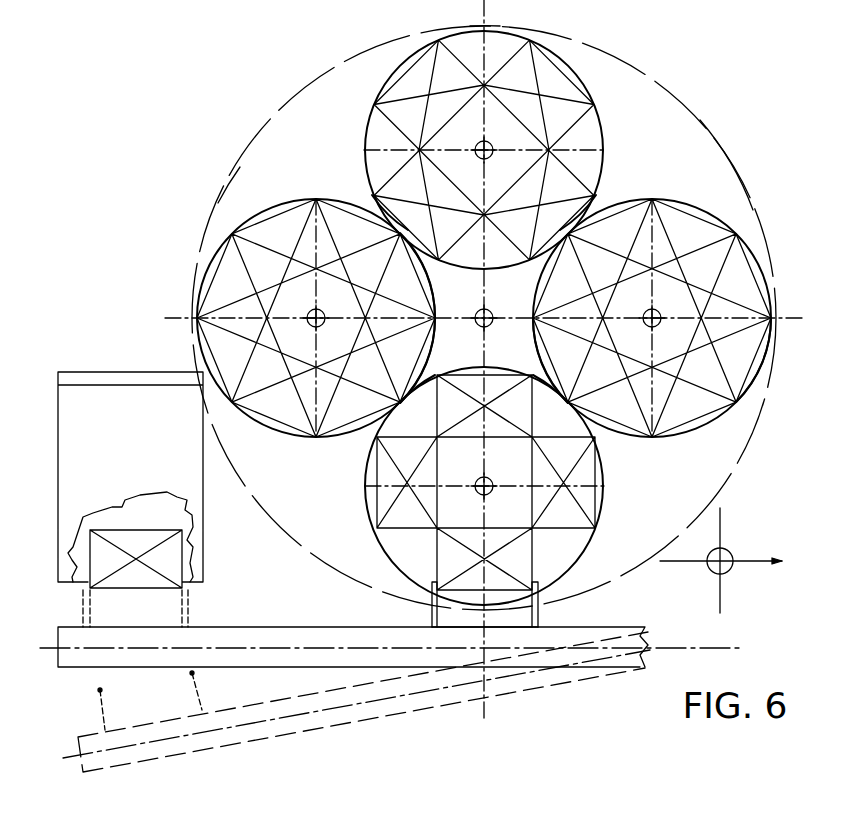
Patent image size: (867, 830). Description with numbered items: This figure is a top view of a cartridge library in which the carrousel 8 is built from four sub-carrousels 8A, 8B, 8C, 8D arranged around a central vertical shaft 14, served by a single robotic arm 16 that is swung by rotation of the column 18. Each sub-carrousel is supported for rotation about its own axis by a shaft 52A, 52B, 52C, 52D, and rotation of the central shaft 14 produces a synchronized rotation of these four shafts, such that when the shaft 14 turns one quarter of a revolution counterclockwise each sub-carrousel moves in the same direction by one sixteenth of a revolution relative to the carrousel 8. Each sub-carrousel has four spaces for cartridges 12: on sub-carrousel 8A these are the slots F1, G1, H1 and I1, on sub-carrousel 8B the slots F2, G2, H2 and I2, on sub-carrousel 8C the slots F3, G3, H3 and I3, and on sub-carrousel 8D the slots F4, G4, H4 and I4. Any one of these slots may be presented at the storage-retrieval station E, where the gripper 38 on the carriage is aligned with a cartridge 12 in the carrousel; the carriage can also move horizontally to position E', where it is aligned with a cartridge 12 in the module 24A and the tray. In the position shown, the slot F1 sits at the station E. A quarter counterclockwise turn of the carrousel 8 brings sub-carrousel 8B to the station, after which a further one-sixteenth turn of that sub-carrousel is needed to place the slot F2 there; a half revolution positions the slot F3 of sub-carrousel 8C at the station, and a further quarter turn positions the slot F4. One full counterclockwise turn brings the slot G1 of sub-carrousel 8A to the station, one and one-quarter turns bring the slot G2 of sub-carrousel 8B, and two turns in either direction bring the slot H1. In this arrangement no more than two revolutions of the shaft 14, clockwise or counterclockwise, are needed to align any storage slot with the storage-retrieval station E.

The carrousel 8 is at (726, 118).
The sub-carrousel 8A is at (722, 515).
The sub-carrousel 8B is at (268, 222).
The sub-carrousel 8C is at (473, 48).
The sub-carrousel 8D is at (697, 227).
The cartridge 12 is at (150, 538).
The vertical shaft 14 is at (490, 314).
The arm 16 is at (597, 615).
The column 18 is at (735, 565).
The module 24A is at (130, 480).
The gripper 38 is at (432, 606).
The shaft 52A is at (560, 462).
The shaft 52B is at (203, 355).
The shaft 52C is at (472, 140).
The shaft 52D is at (775, 322).
The storage-retrieval station E is at (485, 612).
The position E' is at (135, 608).
The cartridge slot F1 is at (582, 575).
The storage slot F2 is at (223, 243).
The storage slot F3 is at (447, 66).
The storage slot F4 is at (627, 220).
The storage slot G1 is at (385, 483).
The storage slot G2 is at (340, 223).
The storage slot G3 is at (572, 83).
The storage slot G4 is at (762, 230).
The storage slot H1 is at (480, 368).
The storage slot H2 is at (405, 318).
The storage slot H3 is at (593, 202).
The storage slot H4 is at (755, 408).
The storage slot I1 is at (590, 500).
The storage slot I2 is at (333, 425).
The storage slot I3 is at (385, 222).
The storage slot I4 is at (558, 362).